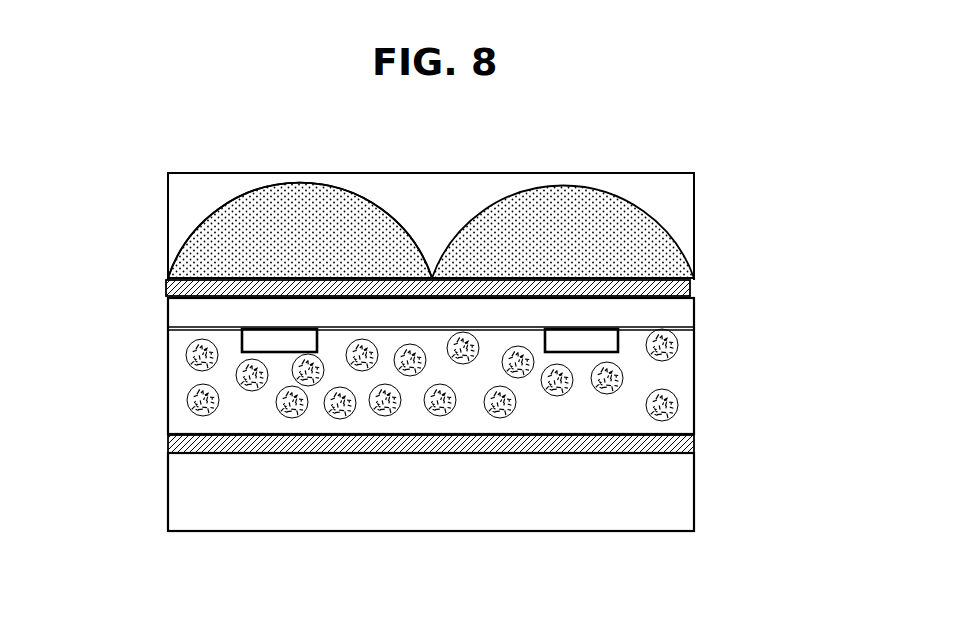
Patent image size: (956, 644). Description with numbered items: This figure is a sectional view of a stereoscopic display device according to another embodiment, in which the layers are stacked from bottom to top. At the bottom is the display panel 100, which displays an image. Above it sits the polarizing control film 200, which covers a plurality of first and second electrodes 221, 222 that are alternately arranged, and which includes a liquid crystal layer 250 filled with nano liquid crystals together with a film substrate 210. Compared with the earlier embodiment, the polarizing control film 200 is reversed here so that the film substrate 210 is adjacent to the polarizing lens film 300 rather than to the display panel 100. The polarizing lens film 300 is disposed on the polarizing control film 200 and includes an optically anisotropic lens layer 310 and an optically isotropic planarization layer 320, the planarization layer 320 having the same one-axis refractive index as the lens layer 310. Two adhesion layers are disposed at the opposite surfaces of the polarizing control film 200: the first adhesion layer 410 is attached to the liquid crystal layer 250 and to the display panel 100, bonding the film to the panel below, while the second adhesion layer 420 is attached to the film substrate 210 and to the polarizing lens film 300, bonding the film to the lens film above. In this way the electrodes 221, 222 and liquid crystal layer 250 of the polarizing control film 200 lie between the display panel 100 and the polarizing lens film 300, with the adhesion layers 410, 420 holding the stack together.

The display panel 100 is at (698, 454).
The polarizing control film 200 is at (447, 409).
The film substrate 210 is at (175, 305).
The first electrode 221 is at (256, 336).
The second electrode 222 is at (590, 344).
The liquid crystal layer 250 is at (173, 375).
The polarizing lens film 300 is at (433, 203).
The lens layer 310 is at (193, 248).
The planarization layer 320 is at (220, 182).
The first adhesion layer 410 is at (609, 445).
The second adhesion layer 420 is at (690, 288).